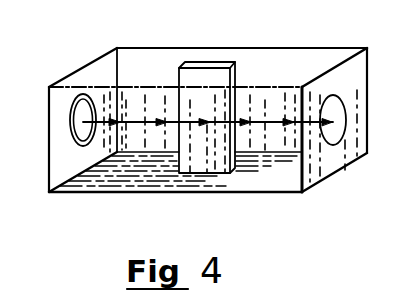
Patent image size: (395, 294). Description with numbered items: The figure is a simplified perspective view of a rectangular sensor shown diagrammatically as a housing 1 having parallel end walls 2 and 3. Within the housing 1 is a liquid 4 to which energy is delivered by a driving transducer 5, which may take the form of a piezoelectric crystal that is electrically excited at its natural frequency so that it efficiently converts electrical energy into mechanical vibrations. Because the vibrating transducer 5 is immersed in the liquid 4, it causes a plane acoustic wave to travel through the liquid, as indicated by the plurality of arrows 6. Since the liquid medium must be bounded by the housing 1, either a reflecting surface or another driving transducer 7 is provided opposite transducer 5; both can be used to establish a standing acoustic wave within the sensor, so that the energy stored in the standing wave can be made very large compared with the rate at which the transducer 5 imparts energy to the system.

The housing 1 is at (242, 31).
The end wall 2 is at (362, 80).
The end wall 3 is at (58, 145).
The liquid 4 is at (137, 57).
The driving transducer 5 is at (81, 112).
The arrows 6 is at (292, 126).
The driving transducer 7 is at (334, 116).